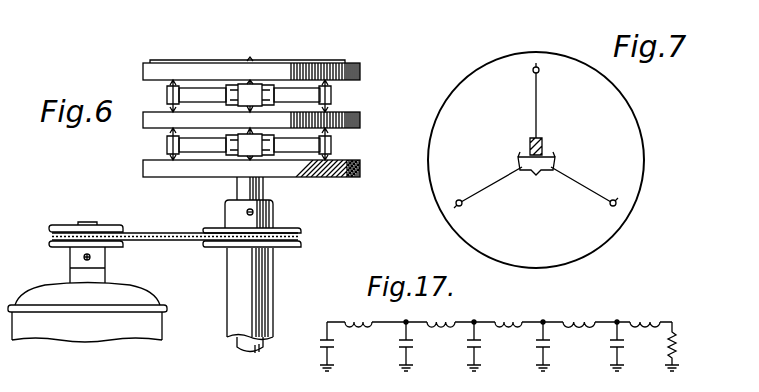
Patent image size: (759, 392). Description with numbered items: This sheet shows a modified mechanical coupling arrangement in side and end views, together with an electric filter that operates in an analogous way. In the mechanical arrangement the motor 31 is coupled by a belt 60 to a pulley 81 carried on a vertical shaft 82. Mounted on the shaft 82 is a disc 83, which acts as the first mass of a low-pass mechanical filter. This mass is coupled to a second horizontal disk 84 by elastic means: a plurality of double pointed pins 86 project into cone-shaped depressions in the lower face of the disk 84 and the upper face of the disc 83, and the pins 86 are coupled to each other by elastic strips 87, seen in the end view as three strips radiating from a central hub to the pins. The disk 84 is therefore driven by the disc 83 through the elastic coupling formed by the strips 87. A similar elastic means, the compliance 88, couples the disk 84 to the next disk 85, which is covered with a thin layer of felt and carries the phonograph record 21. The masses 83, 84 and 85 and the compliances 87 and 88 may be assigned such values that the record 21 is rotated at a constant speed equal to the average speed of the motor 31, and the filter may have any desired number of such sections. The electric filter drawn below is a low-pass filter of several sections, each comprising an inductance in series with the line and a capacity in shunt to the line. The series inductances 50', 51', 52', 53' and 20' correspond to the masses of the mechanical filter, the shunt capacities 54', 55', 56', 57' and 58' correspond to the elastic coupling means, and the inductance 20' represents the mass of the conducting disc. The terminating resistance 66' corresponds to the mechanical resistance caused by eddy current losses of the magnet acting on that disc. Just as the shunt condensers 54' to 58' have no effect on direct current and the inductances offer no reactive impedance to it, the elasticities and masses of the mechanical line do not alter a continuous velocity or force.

In FIG. 6, the phonograph record 21 is at (298, 63).
In FIG. 6, the disk 85 is at (362, 72).
In FIG. 6, the second horizontal disk 84 is at (362, 121).
In FIG. 6, the disc 83 is at (362, 170).
In FIG. 6, the compliance 88 is at (328, 95).
In FIG. 6, the elastic strips 87 is at (310, 146).
In FIG. 7, the elastic strips 87 is at (539, 112).
In FIG. 6, the double pointed pins 86 is at (170, 157).
In FIG. 7, the double pointed pins 86 is at (540, 71).
In FIG. 6, the vertical shaft 82 is at (265, 188).
In FIG. 6, the pulley 81 is at (274, 216).
In FIG. 6, the belt 60 is at (158, 233).
In FIG. 6, the motor 31 is at (143, 300).
In FIG. 17, the inductance 50' is at (353, 311).
In FIG. 17, the inductance 51' is at (457, 310).
In FIG. 17, the inductance 52' is at (520, 310).
In FIG. 17, the inductance 53' is at (583, 310).
In FIG. 17, the inductance 20' is at (647, 310).
In FIG. 17, the capacity 54' is at (312, 346).
In FIG. 17, the capacity 55' is at (386, 346).
In FIG. 17, the capacity 56' is at (456, 346).
In FIG. 17, the capacity 57' is at (521, 346).
In FIG. 17, the capacity 58' is at (597, 346).
In FIG. 17, the resistance 66' is at (657, 346).